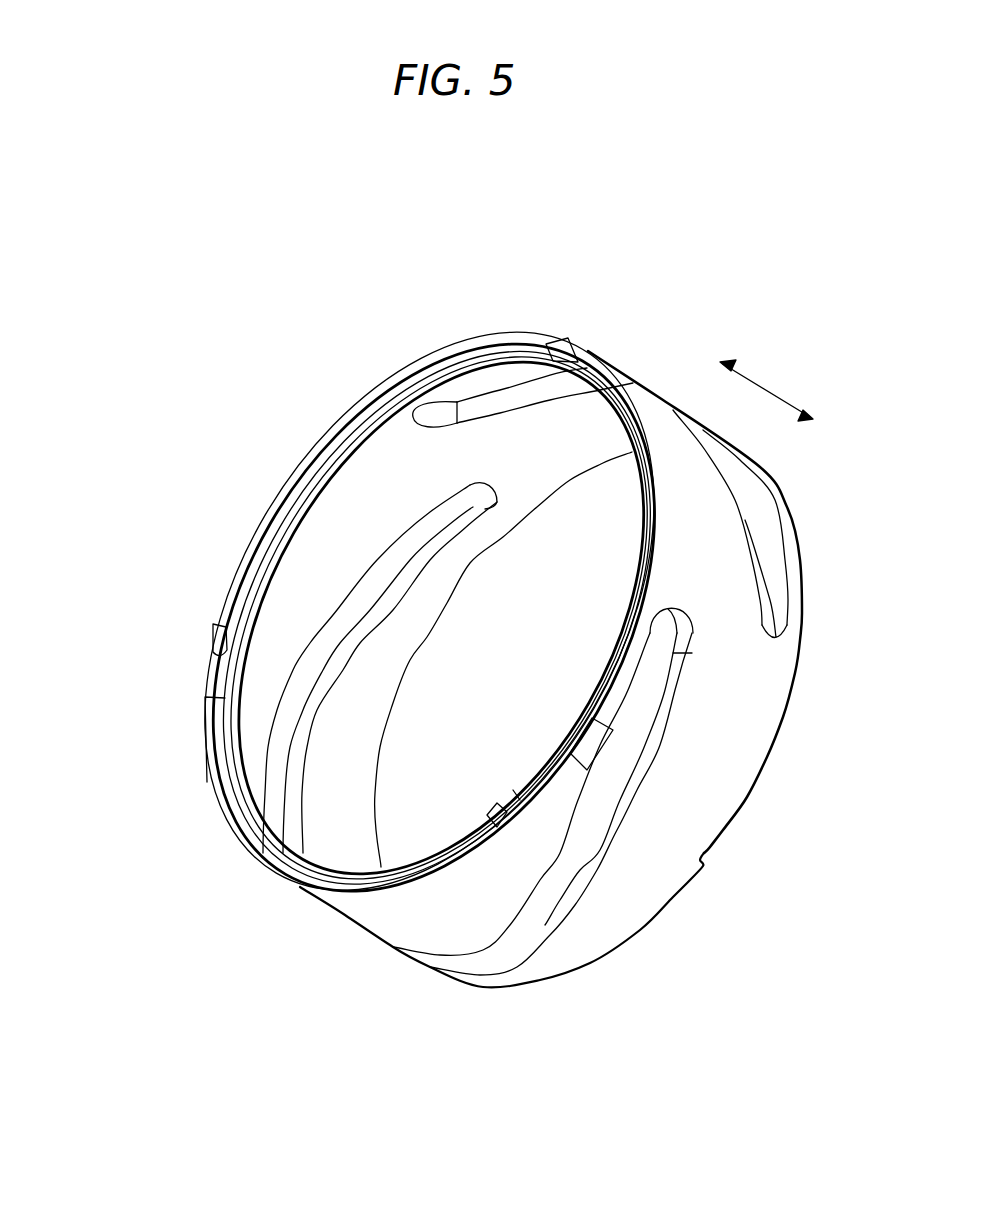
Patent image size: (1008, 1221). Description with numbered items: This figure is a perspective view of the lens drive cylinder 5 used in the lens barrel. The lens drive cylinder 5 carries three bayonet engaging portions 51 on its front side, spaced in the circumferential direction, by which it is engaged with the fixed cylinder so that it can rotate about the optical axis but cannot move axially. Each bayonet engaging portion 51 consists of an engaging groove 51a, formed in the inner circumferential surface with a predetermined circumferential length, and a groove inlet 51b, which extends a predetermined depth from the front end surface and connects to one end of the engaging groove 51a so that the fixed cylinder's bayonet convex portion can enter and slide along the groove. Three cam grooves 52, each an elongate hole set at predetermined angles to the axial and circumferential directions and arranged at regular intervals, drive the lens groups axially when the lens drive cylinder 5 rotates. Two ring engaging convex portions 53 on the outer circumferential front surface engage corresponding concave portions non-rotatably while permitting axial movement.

The lens drive cylinder 5 is at (672, 325).
The bayonet engaging portion 51 is at (363, 657).
The engaging groove 51a is at (222, 631).
The groove inlet 51b is at (219, 674).
The cam groove 52 is at (365, 582).
The ring engaging convex portion 53 is at (592, 752).